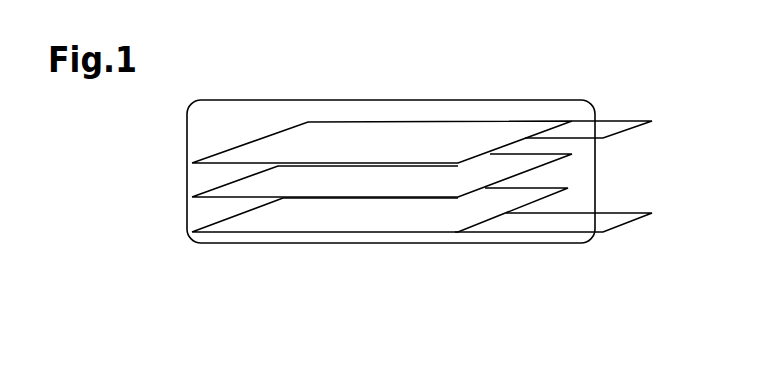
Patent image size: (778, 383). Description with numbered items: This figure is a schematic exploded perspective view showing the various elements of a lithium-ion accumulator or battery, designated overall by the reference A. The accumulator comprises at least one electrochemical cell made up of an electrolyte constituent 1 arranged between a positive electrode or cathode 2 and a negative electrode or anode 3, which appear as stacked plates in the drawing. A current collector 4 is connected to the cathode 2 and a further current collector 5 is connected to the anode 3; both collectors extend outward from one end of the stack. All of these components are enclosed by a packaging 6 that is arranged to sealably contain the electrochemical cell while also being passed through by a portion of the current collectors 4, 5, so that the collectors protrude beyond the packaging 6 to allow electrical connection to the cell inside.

The battery A is at (515, 80).
The electrolyte constituent 1 is at (548, 164).
The positive electrode or cathode 2 is at (398, 138).
The negative electrode or anode 3 is at (320, 211).
The current collector 4 is at (608, 130).
The current collector 5 is at (615, 218).
The packaging 6 is at (405, 245).